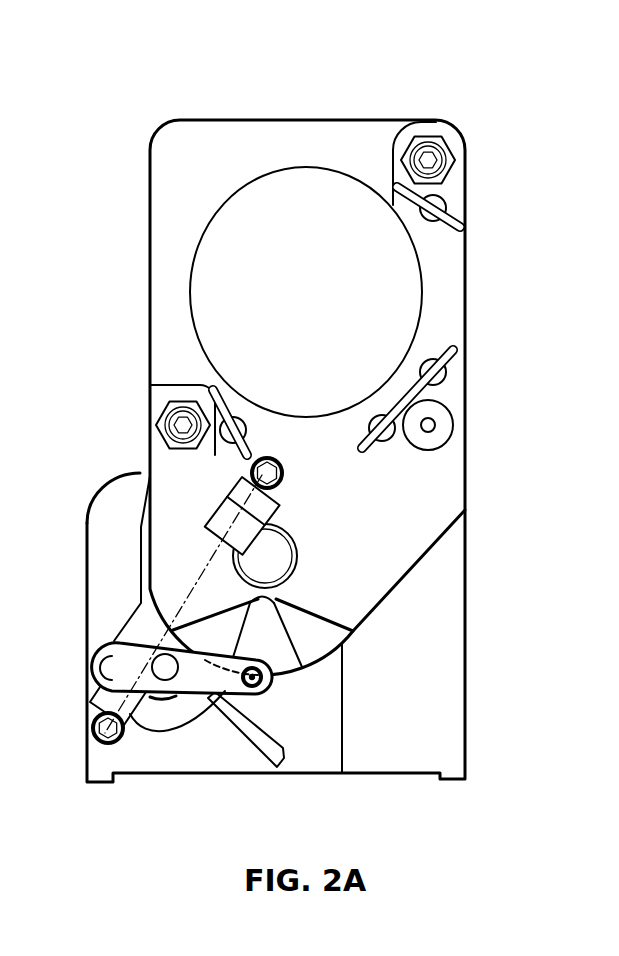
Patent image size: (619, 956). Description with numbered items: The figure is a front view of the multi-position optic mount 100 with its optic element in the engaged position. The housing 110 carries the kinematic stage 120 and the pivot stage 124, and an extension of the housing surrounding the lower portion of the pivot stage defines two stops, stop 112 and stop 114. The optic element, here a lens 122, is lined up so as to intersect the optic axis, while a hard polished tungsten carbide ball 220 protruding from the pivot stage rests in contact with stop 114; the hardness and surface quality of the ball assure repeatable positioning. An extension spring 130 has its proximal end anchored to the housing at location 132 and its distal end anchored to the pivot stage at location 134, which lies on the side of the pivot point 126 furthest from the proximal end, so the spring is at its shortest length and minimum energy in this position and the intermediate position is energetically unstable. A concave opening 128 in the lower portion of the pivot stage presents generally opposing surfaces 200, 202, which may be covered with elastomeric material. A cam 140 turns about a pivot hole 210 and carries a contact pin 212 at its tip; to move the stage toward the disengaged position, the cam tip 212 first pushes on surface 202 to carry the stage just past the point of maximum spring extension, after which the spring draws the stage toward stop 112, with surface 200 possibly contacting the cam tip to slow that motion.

The multi-position optic mount 100 is at (528, 142).
The housing 110 is at (466, 590).
The stop 112 is at (270, 727).
The stop 114 is at (140, 473).
The kinematic stage 120 is at (168, 150).
The lens 122 is at (306, 258).
The pivot stage 124 is at (460, 292).
The pivot point 126 is at (285, 556).
The concave opening 128 is at (272, 622).
The extension spring 130 is at (214, 514).
The anchor location 132 is at (102, 745).
The anchor location 134 is at (280, 474).
The cam 140 is at (201, 680).
The opposing surface 200 is at (288, 634).
The opposing surface 202 is at (297, 657).
The pivot hole 210 is at (166, 670).
The contact pin 212 is at (253, 687).
The tungsten carbide ball 220 is at (150, 472).